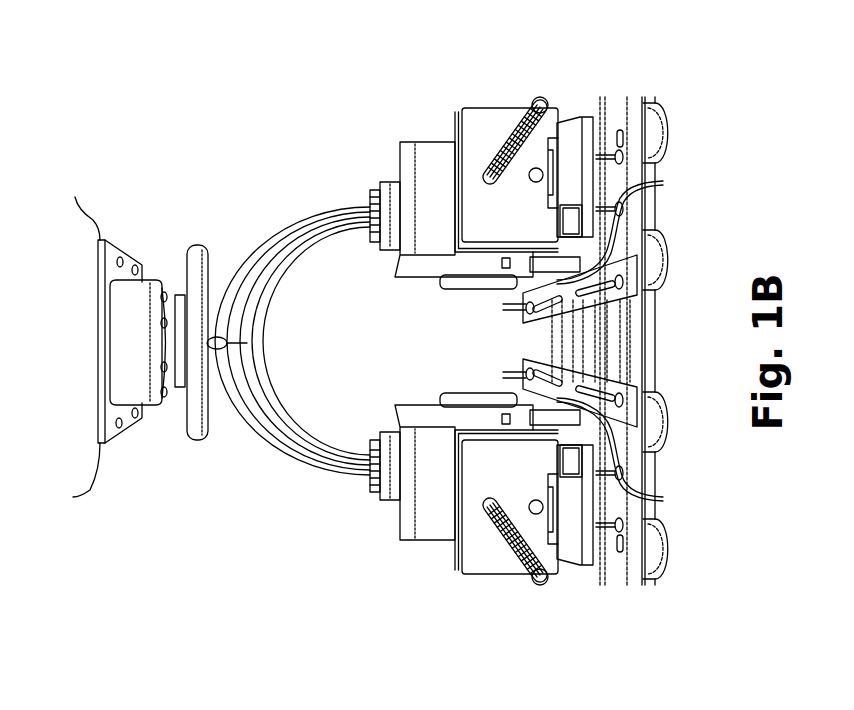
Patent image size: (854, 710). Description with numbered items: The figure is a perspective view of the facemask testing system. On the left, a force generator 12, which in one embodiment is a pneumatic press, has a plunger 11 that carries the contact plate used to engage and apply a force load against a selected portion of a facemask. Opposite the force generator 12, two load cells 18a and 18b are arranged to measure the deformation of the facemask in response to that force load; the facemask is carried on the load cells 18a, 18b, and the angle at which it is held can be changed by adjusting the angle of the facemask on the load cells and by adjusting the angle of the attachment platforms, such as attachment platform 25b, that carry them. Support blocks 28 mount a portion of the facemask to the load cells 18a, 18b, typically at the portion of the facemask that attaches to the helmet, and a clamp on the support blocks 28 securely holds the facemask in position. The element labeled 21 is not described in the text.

The plunger 11 is at (176, 343).
The force generator 12 is at (140, 392).
The load cell 18a is at (450, 464).
The load cell 18b is at (450, 168).
The conveyor rail 21 is at (585, 96).
The attachment platform 25b is at (460, 110).
The support block 28 is at (370, 200).